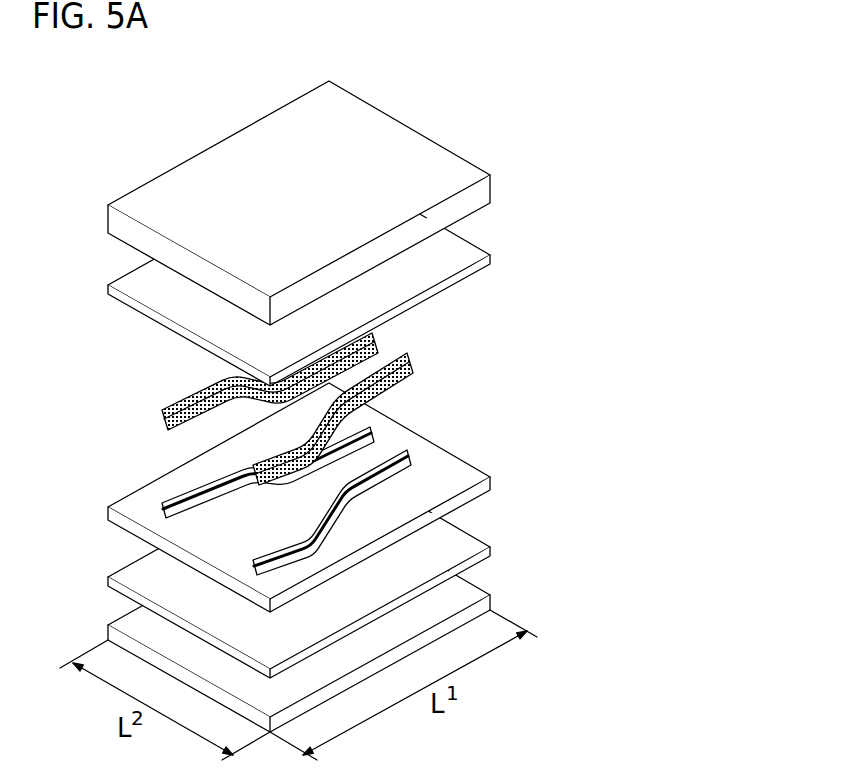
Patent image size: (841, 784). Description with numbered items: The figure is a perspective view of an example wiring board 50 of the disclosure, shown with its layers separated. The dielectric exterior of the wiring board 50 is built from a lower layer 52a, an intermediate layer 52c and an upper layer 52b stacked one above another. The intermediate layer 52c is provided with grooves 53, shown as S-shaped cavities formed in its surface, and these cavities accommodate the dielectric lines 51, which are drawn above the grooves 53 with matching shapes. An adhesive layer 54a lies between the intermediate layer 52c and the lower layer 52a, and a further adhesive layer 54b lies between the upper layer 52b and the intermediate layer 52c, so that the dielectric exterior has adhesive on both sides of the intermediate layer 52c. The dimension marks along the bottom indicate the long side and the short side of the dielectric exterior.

The wiring board 50 is at (132, 131).
The dielectric line 51 is at (410, 353).
The lower layer of dielectric exterior 52a is at (440, 597).
The upper layer of dielectric exterior 52b is at (440, 162).
The intermediate layer 52c is at (440, 481).
The groove 53 is at (408, 455).
The adhesive layer 54a is at (440, 540).
The adhesive layer 54b is at (440, 253).